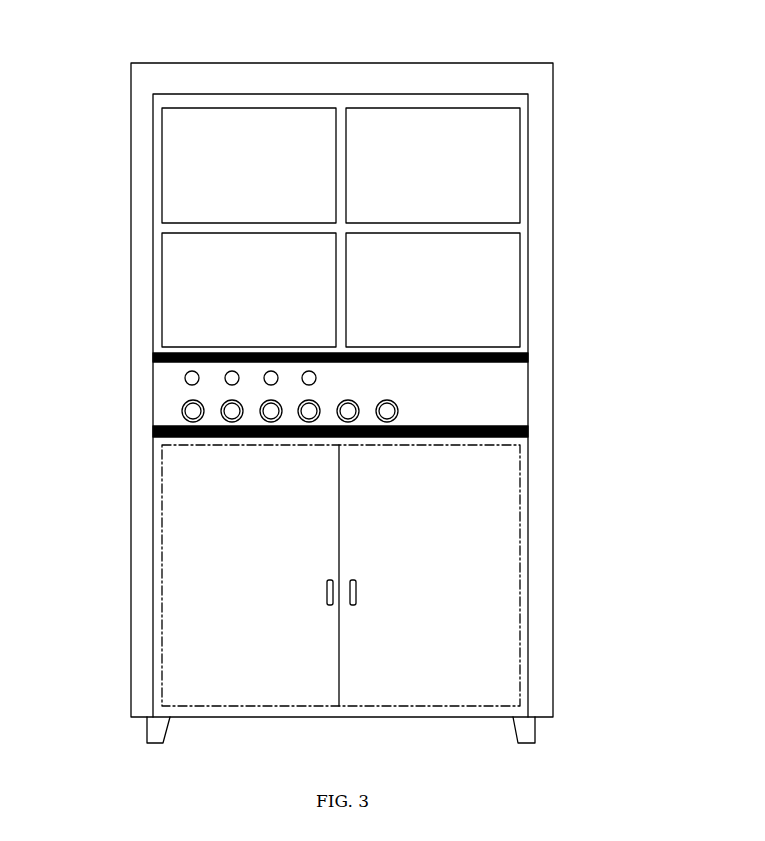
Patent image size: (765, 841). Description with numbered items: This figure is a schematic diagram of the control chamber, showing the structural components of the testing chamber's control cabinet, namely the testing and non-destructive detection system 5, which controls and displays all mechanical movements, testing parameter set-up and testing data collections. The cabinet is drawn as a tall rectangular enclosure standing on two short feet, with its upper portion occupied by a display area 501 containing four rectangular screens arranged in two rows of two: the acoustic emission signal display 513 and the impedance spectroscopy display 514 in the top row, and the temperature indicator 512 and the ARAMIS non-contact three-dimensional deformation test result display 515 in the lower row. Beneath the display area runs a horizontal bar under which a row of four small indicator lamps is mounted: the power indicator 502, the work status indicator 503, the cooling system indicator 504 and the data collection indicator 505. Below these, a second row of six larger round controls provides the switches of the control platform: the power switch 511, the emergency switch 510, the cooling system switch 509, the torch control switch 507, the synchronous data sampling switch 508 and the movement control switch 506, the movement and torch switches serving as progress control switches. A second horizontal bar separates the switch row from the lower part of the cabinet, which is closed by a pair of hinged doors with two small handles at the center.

The testing and non-destructive detection system 5 is at (338, 80).
The display area 501 is at (152, 145).
The power indicator 502 is at (182, 377).
The work status indicator 503 is at (219, 368).
The cooling system indicator 504 is at (258, 369).
The data collection indicator 505 is at (318, 374).
The movement control switch 506 is at (398, 413).
The torch control switch 507 is at (320, 420).
The synchronous data sampling switch 508 is at (343, 422).
The cooling system switch 509 is at (260, 418).
The emergency switch 510 is at (205, 421).
The power switch 511 is at (182, 410).
The temperature indicator 512 is at (520, 288).
The acoustic emission signal display 513 is at (520, 172).
The impedance spectroscopy display 514 is at (162, 182).
The non-contact 3-D deformation test result display 515 is at (162, 265).